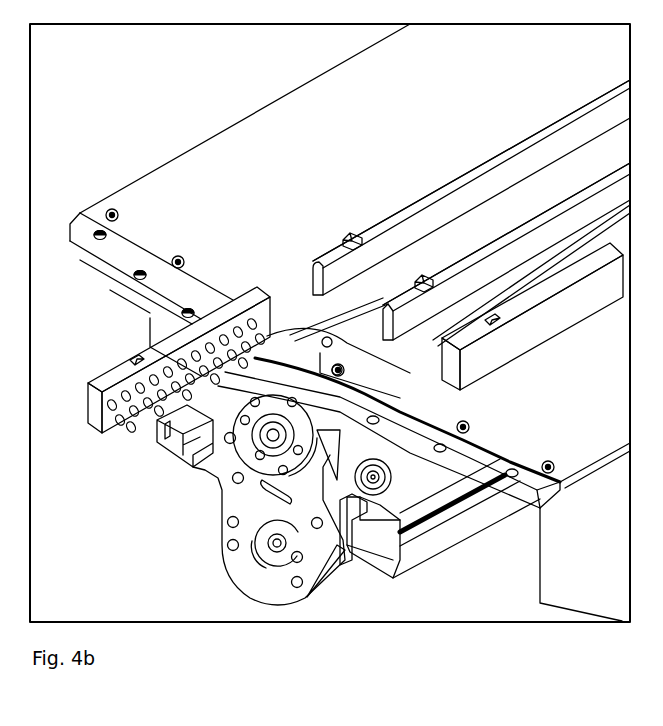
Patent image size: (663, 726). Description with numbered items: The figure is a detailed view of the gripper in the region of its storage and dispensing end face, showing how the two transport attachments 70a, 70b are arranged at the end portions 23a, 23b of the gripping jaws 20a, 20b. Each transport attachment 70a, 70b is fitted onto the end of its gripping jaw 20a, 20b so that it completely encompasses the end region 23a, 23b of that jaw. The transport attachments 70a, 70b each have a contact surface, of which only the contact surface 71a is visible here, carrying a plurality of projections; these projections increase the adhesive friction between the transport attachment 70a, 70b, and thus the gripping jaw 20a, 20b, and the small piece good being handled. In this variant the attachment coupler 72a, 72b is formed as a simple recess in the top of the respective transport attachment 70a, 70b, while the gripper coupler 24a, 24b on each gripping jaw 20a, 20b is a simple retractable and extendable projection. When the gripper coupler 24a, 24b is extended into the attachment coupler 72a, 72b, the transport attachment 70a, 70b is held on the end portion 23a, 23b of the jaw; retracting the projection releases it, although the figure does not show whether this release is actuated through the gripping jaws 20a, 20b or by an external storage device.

The gripping jaw 20a is at (530, 142).
The gripping jaw 20b is at (607, 180).
The end portion of gripping jaw 23a is at (337, 272).
The end portion of gripping jaw 23b is at (452, 292).
The gripper coupler 24a is at (352, 236).
The gripper coupler 24b is at (420, 275).
The transport attachment 70a is at (233, 303).
The transport attachment 70b is at (540, 317).
The contact surface 71a is at (113, 418).
The attachment coupler 72a is at (137, 358).
The attachment coupler 72b is at (492, 319).